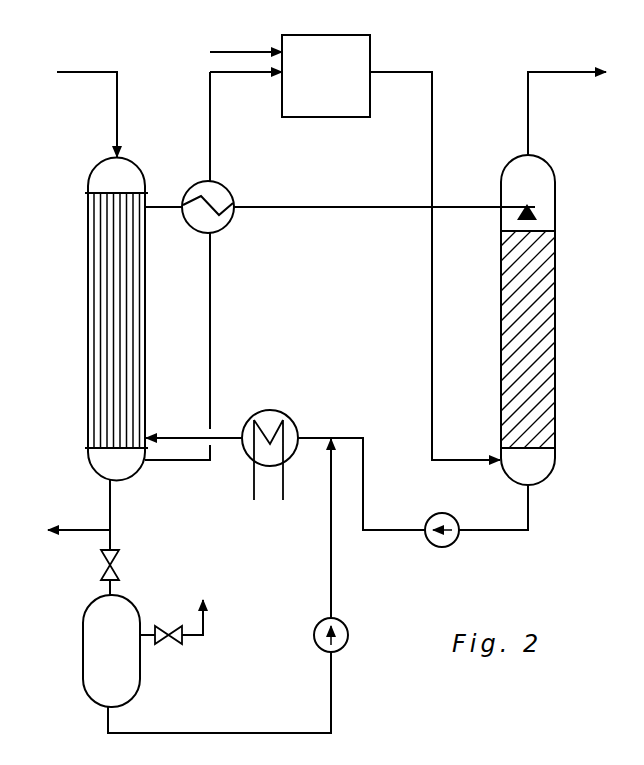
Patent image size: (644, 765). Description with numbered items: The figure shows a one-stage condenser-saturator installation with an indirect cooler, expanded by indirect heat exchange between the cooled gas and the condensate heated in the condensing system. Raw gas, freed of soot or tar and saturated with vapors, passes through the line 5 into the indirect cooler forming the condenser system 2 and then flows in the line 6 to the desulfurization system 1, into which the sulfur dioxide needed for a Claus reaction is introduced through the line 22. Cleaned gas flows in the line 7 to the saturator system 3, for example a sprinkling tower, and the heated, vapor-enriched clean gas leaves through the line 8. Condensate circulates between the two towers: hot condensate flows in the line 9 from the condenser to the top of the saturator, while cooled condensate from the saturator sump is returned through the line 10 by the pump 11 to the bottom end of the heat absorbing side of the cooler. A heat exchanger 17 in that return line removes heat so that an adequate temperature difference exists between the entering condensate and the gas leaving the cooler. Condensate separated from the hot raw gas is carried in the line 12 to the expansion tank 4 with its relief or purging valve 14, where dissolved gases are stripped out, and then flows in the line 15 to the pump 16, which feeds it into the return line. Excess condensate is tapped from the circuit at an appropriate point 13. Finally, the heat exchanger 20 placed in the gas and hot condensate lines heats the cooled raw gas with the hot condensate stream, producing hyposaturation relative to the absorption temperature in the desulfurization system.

The desulfurization system 1 is at (326, 76).
The condenser system 2 is at (105, 319).
The saturator system 3 is at (521, 343).
The expansion tank 4 is at (98, 651).
The line 5 is at (87, 101).
The line 6 is at (213, 254).
The line 7 is at (435, 252).
The line 8 is at (567, 99).
The line 9 is at (340, 192).
The line 10 is at (361, 470).
The pump 11 is at (476, 527).
The line 12 is at (125, 537).
The point 13 is at (79, 517).
The relief or purging valve 14 is at (172, 638).
The line 15 is at (236, 695).
The pump 16 is at (349, 545).
The heat exchanger 17 is at (231, 444).
The heat exchanger 20 is at (225, 199).
The line 22 is at (246, 39).